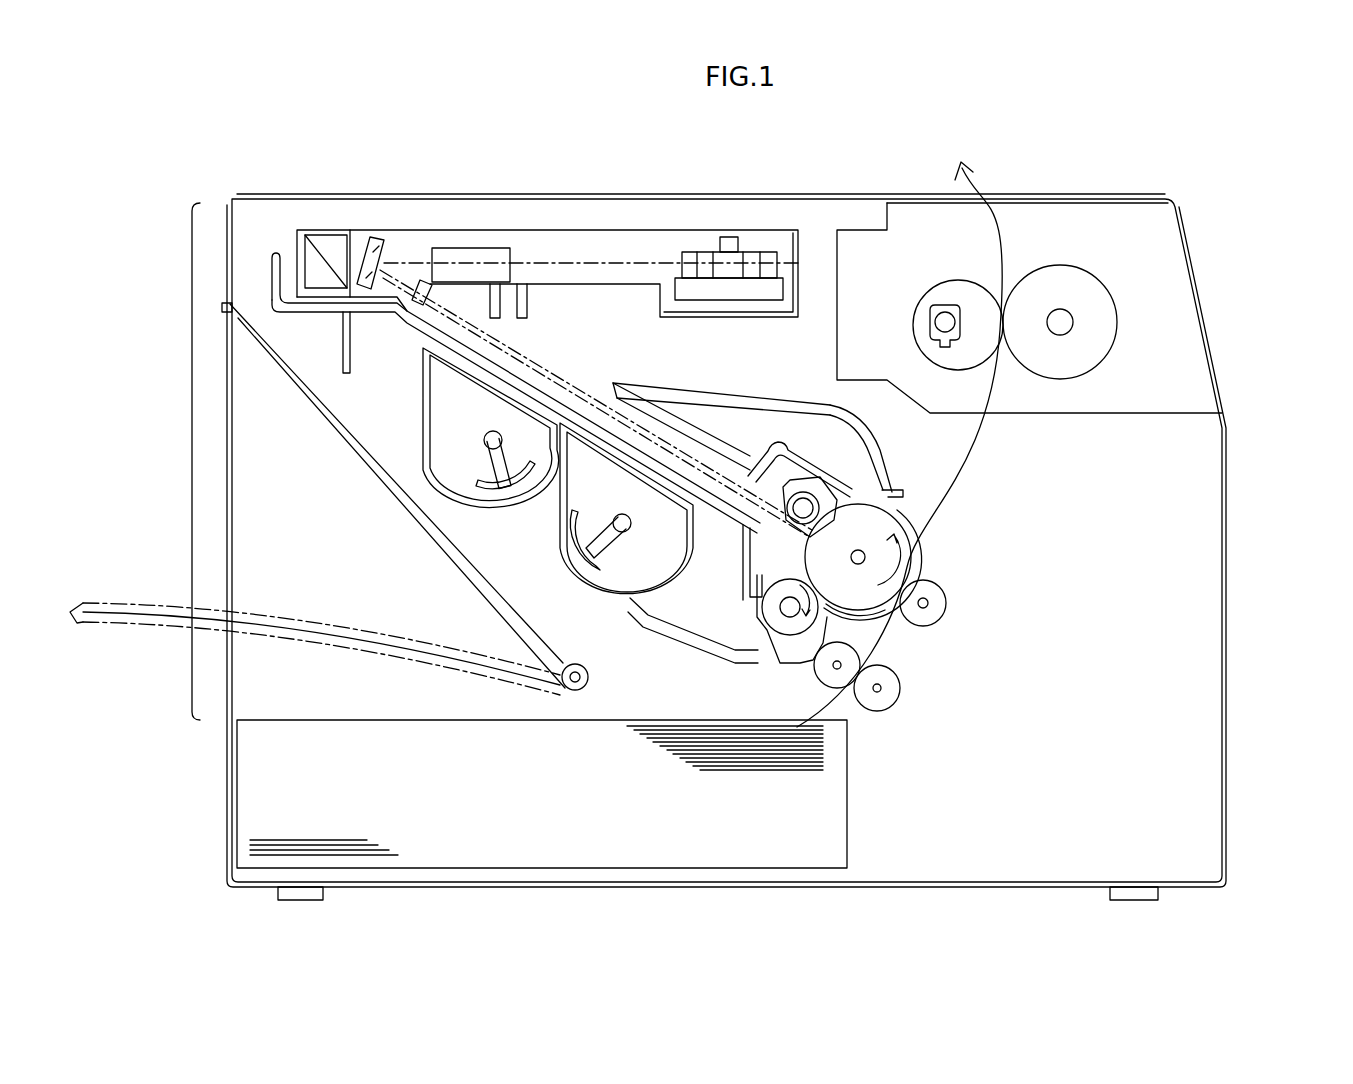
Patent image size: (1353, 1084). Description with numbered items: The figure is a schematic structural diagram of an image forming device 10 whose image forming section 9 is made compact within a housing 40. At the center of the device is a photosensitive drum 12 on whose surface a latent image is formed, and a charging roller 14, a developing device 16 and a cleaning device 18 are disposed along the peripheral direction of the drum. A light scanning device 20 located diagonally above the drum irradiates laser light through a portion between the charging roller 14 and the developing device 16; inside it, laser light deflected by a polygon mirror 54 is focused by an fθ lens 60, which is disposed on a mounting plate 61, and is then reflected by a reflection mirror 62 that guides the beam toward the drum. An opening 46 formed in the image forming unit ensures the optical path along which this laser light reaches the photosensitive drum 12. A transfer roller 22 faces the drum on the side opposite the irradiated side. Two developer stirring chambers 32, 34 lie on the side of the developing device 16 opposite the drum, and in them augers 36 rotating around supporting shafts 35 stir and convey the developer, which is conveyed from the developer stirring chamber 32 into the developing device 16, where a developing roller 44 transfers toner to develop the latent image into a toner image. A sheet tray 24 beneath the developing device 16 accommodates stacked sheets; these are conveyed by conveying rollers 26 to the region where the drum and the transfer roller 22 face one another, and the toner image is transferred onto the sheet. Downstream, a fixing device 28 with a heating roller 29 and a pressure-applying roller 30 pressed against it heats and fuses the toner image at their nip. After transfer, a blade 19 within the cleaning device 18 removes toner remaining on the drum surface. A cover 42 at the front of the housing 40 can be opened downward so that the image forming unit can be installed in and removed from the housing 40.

The image forming section 9 is at (179, 461).
The image forming device 10 is at (784, 547).
The photosensitive drum 12 is at (921, 548).
The charging roller 14 is at (766, 456).
The developing device 16 is at (715, 655).
The cleaning device 18 is at (885, 452).
The blade 19 is at (853, 490).
The light scanning device 20 is at (554, 336).
The transfer roller 22 is at (947, 617).
The sheet tray 24 is at (847, 815).
The conveying rollers 26 is at (900, 700).
The fixing device 28 is at (1110, 418).
The heating roller 29 is at (942, 282).
The pressure-applying roller 30 is at (1085, 270).
The developer stirring chamber 32 is at (628, 585).
The developer stirring chamber 34 is at (500, 512).
The supporting shaft 35 is at (490, 432).
The auger 36 is at (525, 480).
The housing 40 is at (1226, 498).
The cover 42 is at (395, 470).
The developing roller 44 is at (767, 660).
The opening 46 is at (632, 413).
The polygon mirror 54 is at (718, 237).
The fθ lens 60 is at (485, 248).
The mounting plate 61 is at (632, 283).
The reflection mirror 62 is at (378, 237).